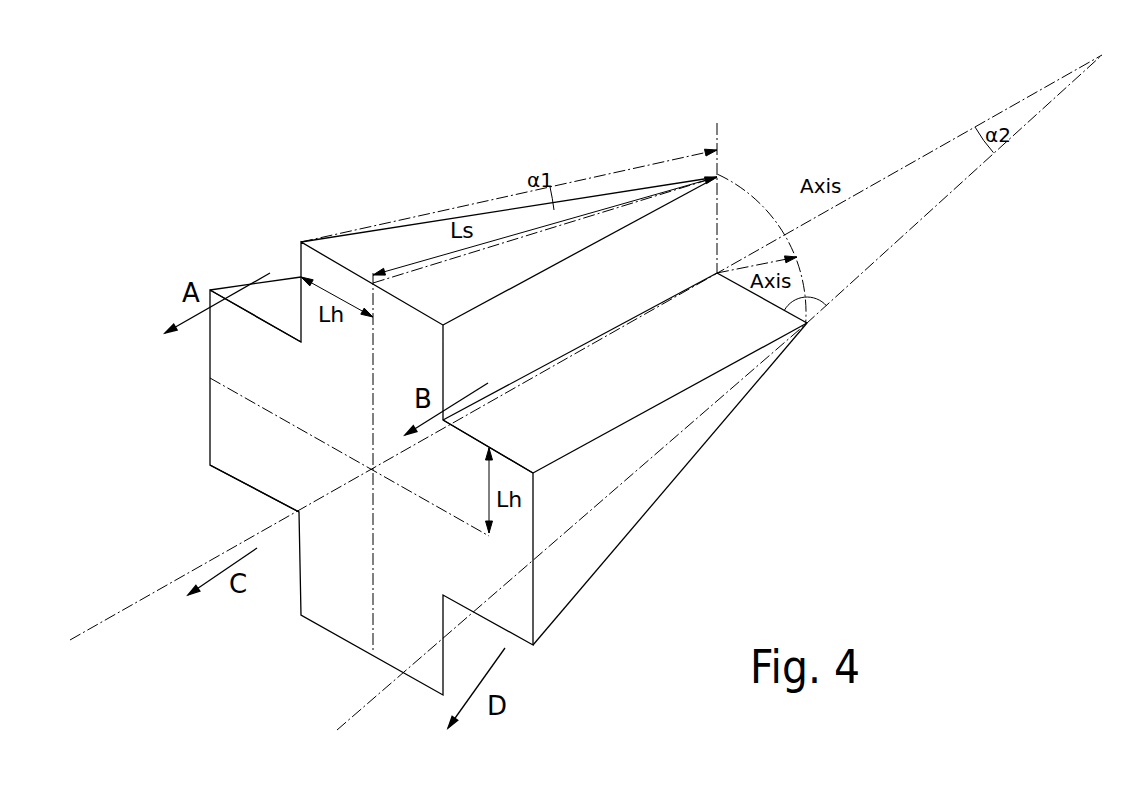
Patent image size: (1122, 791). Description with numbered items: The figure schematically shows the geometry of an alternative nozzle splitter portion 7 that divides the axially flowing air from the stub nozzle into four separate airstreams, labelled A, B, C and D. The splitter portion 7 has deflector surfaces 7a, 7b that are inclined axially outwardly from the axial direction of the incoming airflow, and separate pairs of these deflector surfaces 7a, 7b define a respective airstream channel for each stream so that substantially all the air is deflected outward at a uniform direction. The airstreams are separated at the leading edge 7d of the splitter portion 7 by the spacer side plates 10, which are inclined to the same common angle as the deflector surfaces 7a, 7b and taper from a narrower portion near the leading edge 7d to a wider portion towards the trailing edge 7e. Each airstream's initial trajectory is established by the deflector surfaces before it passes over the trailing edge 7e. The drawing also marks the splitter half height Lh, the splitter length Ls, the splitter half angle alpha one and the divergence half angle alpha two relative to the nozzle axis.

The splitter portion 7 is at (469, 193).
The deflector surface 7a is at (600, 312).
The deflector surface 7b is at (638, 393).
The leading edge 7d is at (827, 306).
The trailing edge 7e is at (470, 438).
The spacer side plates 10 is at (573, 233).